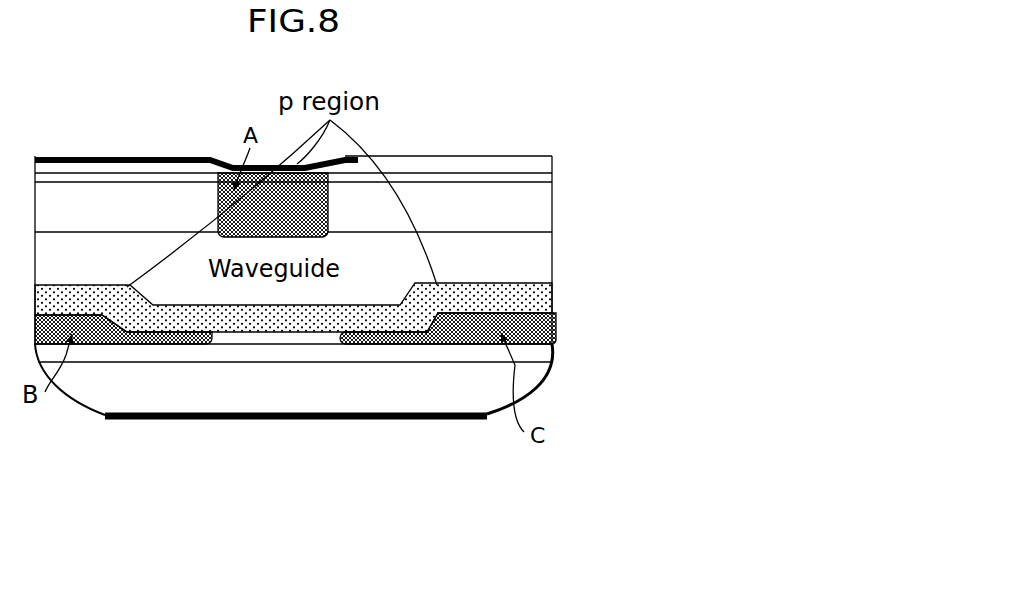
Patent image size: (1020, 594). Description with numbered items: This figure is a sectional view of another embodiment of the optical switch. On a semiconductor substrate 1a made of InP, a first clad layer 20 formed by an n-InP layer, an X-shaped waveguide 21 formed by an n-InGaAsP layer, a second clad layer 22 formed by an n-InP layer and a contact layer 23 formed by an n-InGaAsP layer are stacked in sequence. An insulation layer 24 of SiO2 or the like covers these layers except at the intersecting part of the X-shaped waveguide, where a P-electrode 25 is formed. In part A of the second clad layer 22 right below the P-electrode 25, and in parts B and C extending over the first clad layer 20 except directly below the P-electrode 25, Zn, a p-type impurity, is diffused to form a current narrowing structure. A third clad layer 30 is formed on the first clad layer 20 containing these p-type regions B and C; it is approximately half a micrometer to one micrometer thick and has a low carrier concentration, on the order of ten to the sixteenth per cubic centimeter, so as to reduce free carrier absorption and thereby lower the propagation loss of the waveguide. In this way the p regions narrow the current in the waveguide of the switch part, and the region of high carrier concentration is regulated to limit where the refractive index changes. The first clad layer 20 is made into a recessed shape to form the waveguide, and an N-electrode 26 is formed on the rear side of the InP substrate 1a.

The semiconductor substrate 1a is at (294, 379).
The first clad layer 20 is at (532, 350).
The X-shaped waveguide 21 is at (538, 253).
The second clad layer 22 is at (540, 200).
The contact layer 23 is at (530, 177).
The insulation layer 24 is at (438, 163).
The P-electrode 25 is at (81, 156).
The N-electrode 26 is at (231, 425).
The third clad layer 30 is at (555, 308).